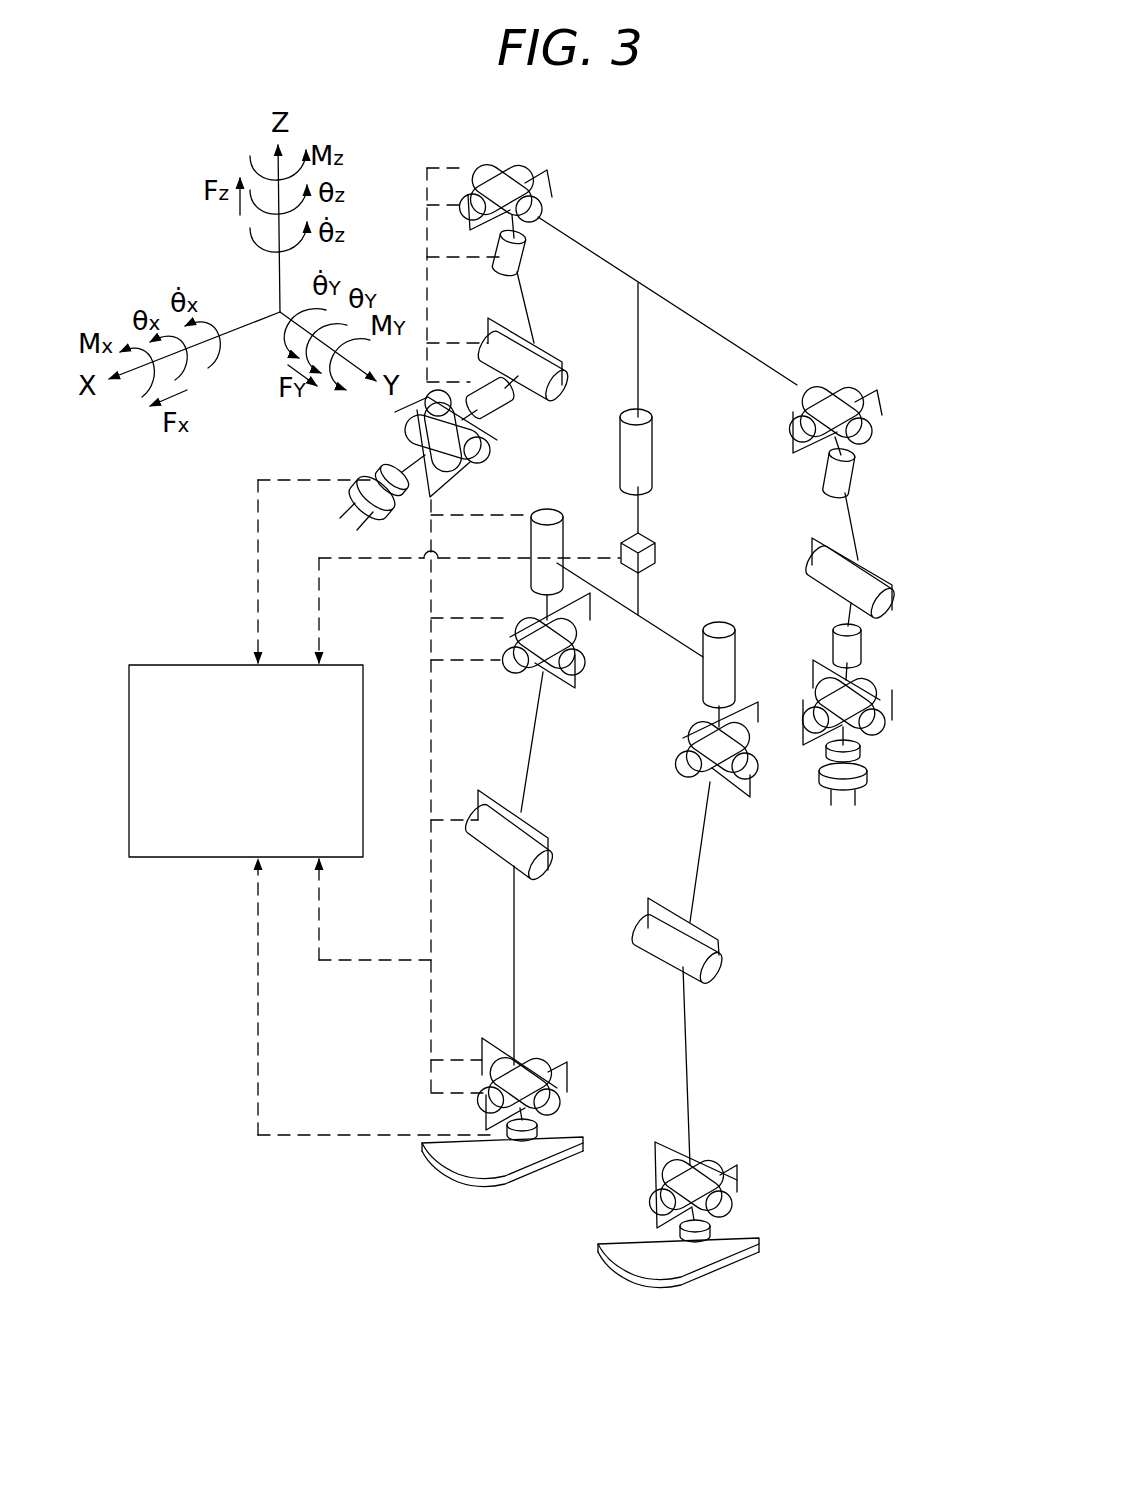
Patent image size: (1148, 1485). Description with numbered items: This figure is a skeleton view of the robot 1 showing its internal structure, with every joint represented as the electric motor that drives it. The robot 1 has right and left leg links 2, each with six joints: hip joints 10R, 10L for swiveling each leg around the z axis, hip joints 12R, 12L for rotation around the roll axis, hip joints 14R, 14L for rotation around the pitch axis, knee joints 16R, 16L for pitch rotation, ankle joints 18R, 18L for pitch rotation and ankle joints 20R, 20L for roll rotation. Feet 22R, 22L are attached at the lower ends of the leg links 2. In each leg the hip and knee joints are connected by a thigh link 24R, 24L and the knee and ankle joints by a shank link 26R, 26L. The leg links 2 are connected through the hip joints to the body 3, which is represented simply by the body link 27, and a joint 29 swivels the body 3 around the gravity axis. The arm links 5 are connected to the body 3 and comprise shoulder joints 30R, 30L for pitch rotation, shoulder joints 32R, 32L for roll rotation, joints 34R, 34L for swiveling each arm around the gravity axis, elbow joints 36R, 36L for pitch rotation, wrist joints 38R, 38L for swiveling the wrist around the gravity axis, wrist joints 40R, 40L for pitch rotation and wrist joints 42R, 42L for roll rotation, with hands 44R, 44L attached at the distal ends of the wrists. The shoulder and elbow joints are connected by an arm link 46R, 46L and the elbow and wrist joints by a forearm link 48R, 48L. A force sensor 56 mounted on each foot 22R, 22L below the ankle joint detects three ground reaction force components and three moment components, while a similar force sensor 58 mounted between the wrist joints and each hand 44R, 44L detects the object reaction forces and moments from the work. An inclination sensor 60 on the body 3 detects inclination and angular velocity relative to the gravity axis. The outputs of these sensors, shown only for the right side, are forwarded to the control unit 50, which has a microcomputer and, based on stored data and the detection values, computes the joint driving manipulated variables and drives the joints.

The robot 1 is at (782, 300).
The leg links 2 is at (802, 910).
The body 3 is at (655, 270).
The arm links 5 is at (887, 440).
The hip swivel joint 10R is at (557, 560).
The hip swivel joint 10L is at (728, 660).
The hip roll joint 12R is at (513, 670).
The hip roll joint 12L is at (750, 740).
The hip pitch joint 14R is at (520, 615).
The hip pitch joint 14L is at (760, 770).
The knee joint 16R is at (537, 873).
The knee joint 16L is at (718, 965).
The ankle pitch joint 18R is at (560, 1105).
The ankle pitch joint 18L is at (733, 1203).
The ankle roll joint 20R is at (550, 1065).
The ankle roll joint 20L is at (718, 1160).
The foot 22R is at (450, 1150).
The foot 22L is at (735, 1240).
The thigh link 24R is at (527, 797).
The thigh link 24L is at (700, 875).
The shank link 26R is at (512, 930).
The shank link 26L is at (685, 1062).
The body link 27 is at (640, 610).
The body swivel joint 29 is at (652, 455).
The shoulder pitch joint 30R is at (478, 170).
The shoulder pitch joint 30L is at (805, 388).
The shoulder roll joint 32R is at (540, 172).
The shoulder roll joint 32L is at (863, 396).
The arm swivel joint 34R is at (522, 255).
The arm swivel joint 34L is at (860, 480).
The elbow joint 36R is at (558, 378).
The elbow joint 36L is at (890, 603).
The wrist swivel joint 38R is at (503, 402).
The wrist swivel joint 38L is at (858, 648).
The wrist pitch joint 40R is at (415, 432).
The wrist pitch joint 40L is at (872, 732).
The wrist roll joint 42R is at (450, 462).
The wrist roll joint 42L is at (878, 690).
The hand 44R is at (378, 530).
The hand 44L is at (865, 782).
The arm link 46R is at (528, 310).
The arm link 46L is at (862, 530).
The forearm link 48R is at (513, 383).
The forearm link 48L is at (848, 615).
The control unit 50 is at (205, 663).
The force sensor 56 is at (528, 1136).
The force sensor 58 is at (385, 478).
The inclination sensor 60 is at (650, 545).